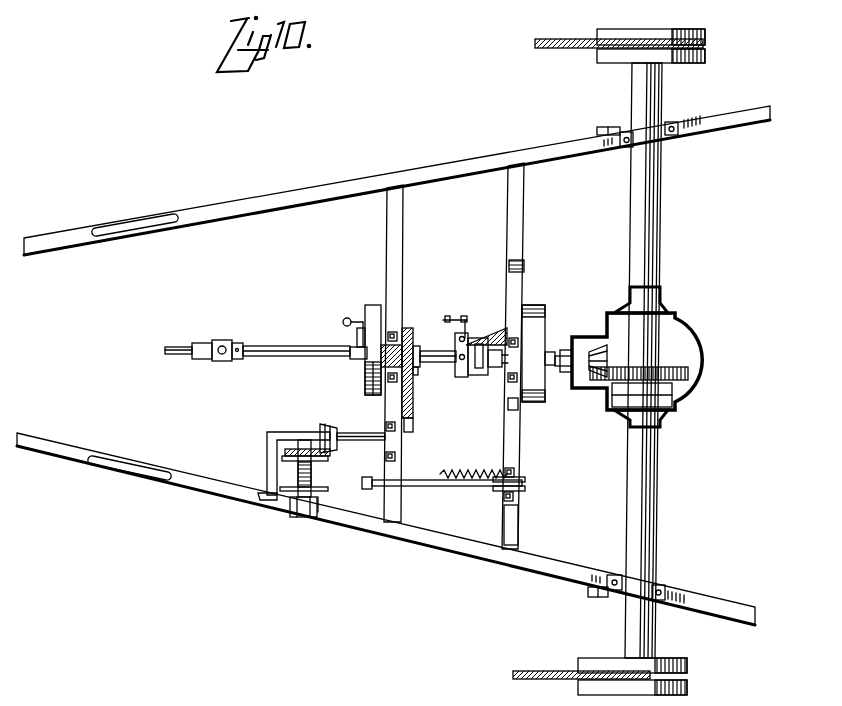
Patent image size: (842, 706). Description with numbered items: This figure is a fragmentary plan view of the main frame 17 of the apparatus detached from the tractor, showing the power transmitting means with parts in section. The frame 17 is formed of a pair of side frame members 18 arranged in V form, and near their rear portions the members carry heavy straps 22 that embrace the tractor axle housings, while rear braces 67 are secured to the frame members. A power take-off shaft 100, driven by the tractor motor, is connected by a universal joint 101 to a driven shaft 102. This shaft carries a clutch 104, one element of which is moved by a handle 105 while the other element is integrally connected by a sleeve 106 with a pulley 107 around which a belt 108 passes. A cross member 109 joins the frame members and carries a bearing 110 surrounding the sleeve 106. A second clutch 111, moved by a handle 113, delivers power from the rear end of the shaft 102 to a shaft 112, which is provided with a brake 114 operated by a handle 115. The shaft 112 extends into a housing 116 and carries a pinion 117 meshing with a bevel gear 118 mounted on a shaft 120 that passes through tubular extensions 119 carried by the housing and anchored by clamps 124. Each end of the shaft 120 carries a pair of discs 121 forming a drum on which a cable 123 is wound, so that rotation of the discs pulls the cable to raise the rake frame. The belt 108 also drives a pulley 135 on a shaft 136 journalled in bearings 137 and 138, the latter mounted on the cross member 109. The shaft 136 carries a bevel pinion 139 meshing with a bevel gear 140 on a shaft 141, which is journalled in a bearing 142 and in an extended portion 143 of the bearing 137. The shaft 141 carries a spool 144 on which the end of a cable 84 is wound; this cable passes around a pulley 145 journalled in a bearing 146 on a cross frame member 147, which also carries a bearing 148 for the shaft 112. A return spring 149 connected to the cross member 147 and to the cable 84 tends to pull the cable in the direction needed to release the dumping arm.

The main frame 17 is at (470, 160).
The side frame members 18 is at (272, 205).
The straps 22 is at (143, 220).
The rear braces 67 is at (602, 128).
The cable 84 is at (462, 488).
The power take-off shaft 100 is at (178, 346).
The universal joint 101 is at (222, 341).
The driven shaft 102 is at (283, 346).
The clutch 104 is at (372, 306).
The handle 105 is at (344, 321).
The sleeve 106 is at (386, 352).
The pulley 107 is at (407, 328).
The belt 108 is at (416, 378).
The cross member 109 is at (405, 261).
The bearing 110 is at (388, 381).
The clutch 111 is at (490, 335).
The shaft 112 is at (497, 378).
The handle 113 is at (455, 320).
The brake 114 is at (537, 330).
The handle 115 is at (508, 290).
The housing 116 is at (690, 334).
The pinion 117 is at (592, 345).
The bevel gear 118 is at (690, 372).
The tubular extensions 119 is at (664, 266).
The shaft 120 is at (656, 300).
The discs 121 is at (706, 62).
The cable 123 is at (563, 32).
The clamps 124 is at (668, 123).
The pulley 135 is at (412, 412).
The shaft 136 is at (357, 436).
The bearing 137 is at (268, 453).
The bearing 138 is at (312, 466).
The bevel pinion 139 is at (322, 425).
The bevel gear 140 is at (328, 458).
The shaft 141 is at (296, 518).
The bearing 142 is at (318, 513).
The extended portion 143 is at (300, 447).
The spool 144 is at (318, 492).
The pulley 145 is at (522, 488).
The bearing 146 is at (525, 494).
The cross frame member 147 is at (520, 528).
The bearing 148 is at (512, 396).
The return spring 149 is at (460, 470).